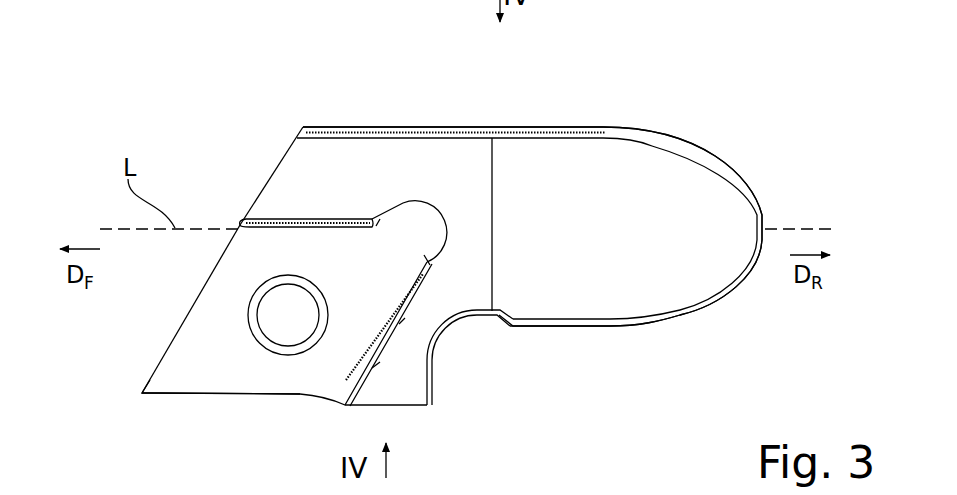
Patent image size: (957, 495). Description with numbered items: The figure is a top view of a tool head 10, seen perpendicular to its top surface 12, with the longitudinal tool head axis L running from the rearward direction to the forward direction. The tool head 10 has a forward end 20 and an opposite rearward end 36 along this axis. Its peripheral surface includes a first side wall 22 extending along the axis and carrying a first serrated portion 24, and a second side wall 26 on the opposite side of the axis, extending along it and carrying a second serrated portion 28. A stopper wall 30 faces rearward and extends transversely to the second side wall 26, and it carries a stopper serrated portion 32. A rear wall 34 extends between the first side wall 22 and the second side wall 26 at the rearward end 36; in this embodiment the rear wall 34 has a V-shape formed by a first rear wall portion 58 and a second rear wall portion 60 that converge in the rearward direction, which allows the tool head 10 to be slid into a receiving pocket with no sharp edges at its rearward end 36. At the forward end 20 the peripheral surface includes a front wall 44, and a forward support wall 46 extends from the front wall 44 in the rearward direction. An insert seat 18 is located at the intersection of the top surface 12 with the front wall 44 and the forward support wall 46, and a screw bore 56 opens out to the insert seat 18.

The tool head 10 is at (620, 80).
The top surface 12 is at (294, 171).
The insert seat 18 is at (168, 372).
The forward end 20 is at (108, 344).
The first side wall 22 is at (371, 123).
The first serrated portion 24 is at (548, 127).
The second side wall 26 is at (618, 328).
The second serrated portion 28 is at (553, 327).
The stopper wall 30 is at (436, 392).
The stopper serrated portion 32 is at (437, 372).
The rear wall 34 is at (736, 172).
The rearward end 36 is at (790, 205).
The front wall 44 is at (212, 288).
The forward support wall 46 is at (200, 395).
The screw bore 56 is at (283, 318).
The first rear wall portion 58 is at (706, 160).
The second rear wall portion 60 is at (695, 298).